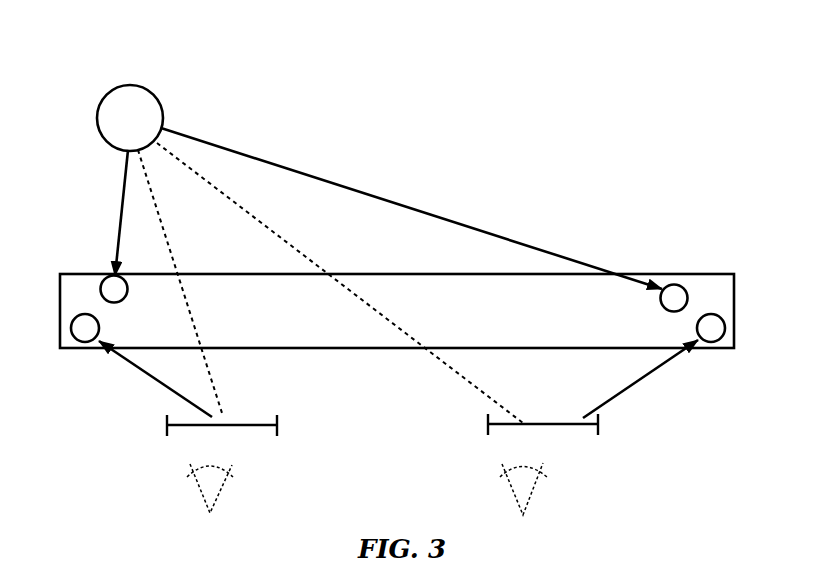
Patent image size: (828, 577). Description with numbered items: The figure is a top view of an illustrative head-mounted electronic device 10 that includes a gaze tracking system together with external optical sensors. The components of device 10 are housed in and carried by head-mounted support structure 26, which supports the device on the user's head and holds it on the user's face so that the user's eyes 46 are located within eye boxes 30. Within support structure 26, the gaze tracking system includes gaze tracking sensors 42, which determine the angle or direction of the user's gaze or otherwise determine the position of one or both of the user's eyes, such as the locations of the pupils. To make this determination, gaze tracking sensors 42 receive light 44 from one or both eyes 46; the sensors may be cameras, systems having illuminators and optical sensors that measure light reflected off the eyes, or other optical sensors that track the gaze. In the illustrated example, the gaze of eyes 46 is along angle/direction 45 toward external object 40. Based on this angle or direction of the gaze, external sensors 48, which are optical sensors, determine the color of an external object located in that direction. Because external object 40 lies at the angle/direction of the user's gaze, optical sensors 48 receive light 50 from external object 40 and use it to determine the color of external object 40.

The electronic device 10 is at (634, 136).
The head-mounted support structure 26 is at (724, 290).
The eye boxes 30 is at (277, 425).
The external object 40 is at (130, 96).
The gaze tracking sensors 42 is at (80, 326).
The light 44 is at (131, 366).
The angle/direction 45 is at (165, 237).
The eyes 46 is at (207, 486).
The external sensors 48 is at (111, 289).
The light 50 is at (120, 185).